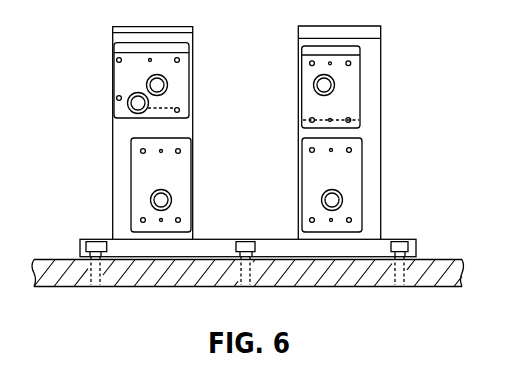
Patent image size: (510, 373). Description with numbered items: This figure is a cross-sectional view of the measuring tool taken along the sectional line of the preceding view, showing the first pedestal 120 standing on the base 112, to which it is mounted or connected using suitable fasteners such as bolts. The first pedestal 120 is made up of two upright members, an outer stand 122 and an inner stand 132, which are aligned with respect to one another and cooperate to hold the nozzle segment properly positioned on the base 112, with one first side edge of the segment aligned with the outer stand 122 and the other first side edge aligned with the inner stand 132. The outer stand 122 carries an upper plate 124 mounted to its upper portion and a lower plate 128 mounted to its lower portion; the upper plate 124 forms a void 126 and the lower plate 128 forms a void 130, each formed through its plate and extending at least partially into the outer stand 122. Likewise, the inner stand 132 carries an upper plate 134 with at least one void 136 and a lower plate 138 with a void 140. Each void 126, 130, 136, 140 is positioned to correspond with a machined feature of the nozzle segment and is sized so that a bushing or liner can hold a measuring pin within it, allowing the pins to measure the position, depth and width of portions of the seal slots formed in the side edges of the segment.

The base 112 is at (428, 263).
The first pedestal 120 is at (80, 250).
The outer stand 122 is at (375, 60).
The upper plate 124 is at (352, 108).
The void 126 is at (336, 85).
The lower plate 128 is at (352, 180).
The void 130 is at (343, 198).
The inner stand 132 is at (115, 36).
The upper plate 134 is at (117, 70).
The void 136 is at (167, 83).
The lower plate 138 is at (182, 168).
The void 140 is at (172, 198).